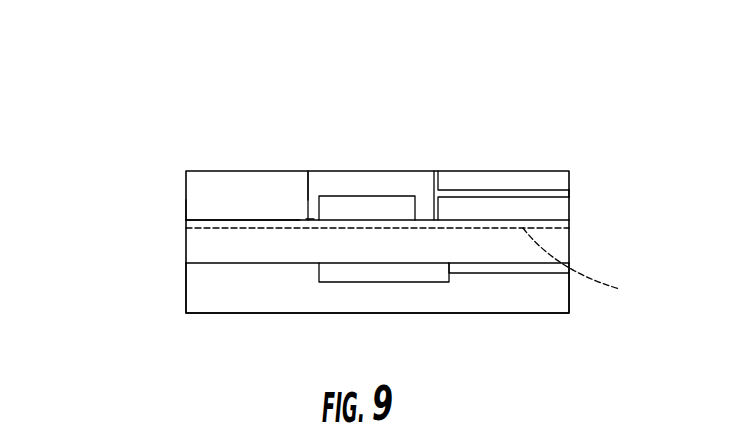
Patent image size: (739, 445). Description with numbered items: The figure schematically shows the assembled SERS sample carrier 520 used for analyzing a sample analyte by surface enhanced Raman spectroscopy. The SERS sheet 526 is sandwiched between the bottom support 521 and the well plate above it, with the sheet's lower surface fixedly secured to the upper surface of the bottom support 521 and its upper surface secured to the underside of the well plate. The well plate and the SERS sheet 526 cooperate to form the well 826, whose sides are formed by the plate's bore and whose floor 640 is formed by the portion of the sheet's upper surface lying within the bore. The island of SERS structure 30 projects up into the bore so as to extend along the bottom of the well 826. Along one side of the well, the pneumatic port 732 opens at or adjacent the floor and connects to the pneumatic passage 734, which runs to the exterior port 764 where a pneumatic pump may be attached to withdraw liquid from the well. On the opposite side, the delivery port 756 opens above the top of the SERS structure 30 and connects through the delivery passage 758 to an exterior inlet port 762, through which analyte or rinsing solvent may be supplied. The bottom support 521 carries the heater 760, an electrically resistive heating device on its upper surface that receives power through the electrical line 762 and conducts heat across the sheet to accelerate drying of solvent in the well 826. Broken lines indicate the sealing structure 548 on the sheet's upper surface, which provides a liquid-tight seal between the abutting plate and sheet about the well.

The sensor assembly 520 is at (149, 99).
The SERS sheet 526 is at (178, 251).
The bottom support 521 is at (186, 289).
The pneumatic port 732 is at (305, 220).
The floor 640 is at (312, 219).
The well 826 is at (311, 180).
The SERS structure 30 is at (362, 185).
The pneumatic passage 734 is at (238, 220).
The exterior port 764 is at (187, 219).
The delivery port 756 is at (438, 195).
The delivery passage 758 is at (528, 190).
The electrical line 762 is at (570, 195).
The heater 760 is at (398, 282).
The sealing structure 548 is at (583, 273).